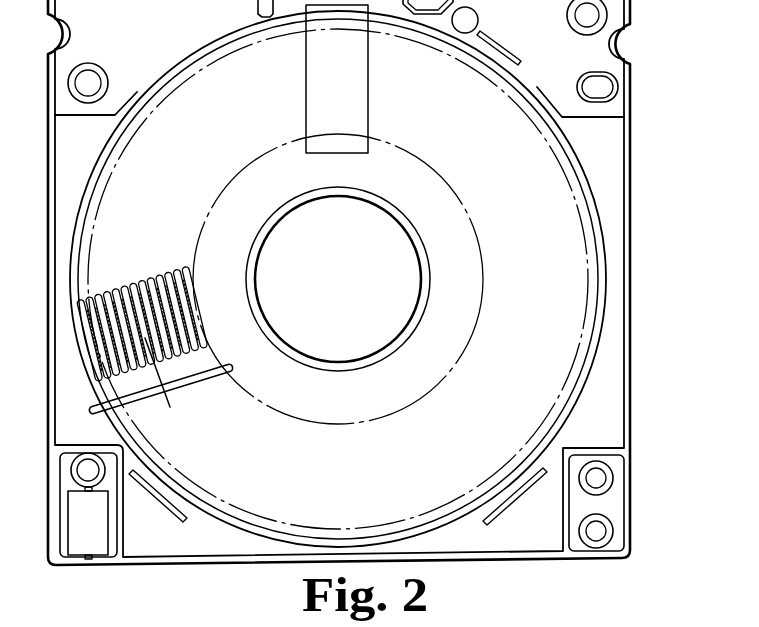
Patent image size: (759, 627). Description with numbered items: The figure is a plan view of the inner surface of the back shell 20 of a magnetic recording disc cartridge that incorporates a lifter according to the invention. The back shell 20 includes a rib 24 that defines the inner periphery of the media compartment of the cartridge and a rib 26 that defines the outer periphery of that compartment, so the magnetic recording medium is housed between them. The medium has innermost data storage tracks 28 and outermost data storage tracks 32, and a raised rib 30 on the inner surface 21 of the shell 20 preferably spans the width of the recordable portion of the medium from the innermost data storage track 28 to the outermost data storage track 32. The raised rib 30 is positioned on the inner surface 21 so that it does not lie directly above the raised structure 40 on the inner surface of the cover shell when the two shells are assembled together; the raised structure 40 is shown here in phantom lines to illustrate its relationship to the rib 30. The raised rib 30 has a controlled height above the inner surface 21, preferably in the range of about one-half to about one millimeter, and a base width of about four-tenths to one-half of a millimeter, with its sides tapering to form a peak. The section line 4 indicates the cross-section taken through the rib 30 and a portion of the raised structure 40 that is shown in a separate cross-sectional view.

The back shell 20 is at (645, 112).
The inner surface 21 is at (449, 358).
The rib 24 is at (420, 245).
The rib 26 is at (605, 265).
The innermost data storage tracks 28 is at (485, 262).
The raised rib 30 is at (92, 410).
The outermost data storage tracks 32 is at (563, 390).
The raised structure 40 is at (88, 367).
The section line 4- 4 is at (145, 338).